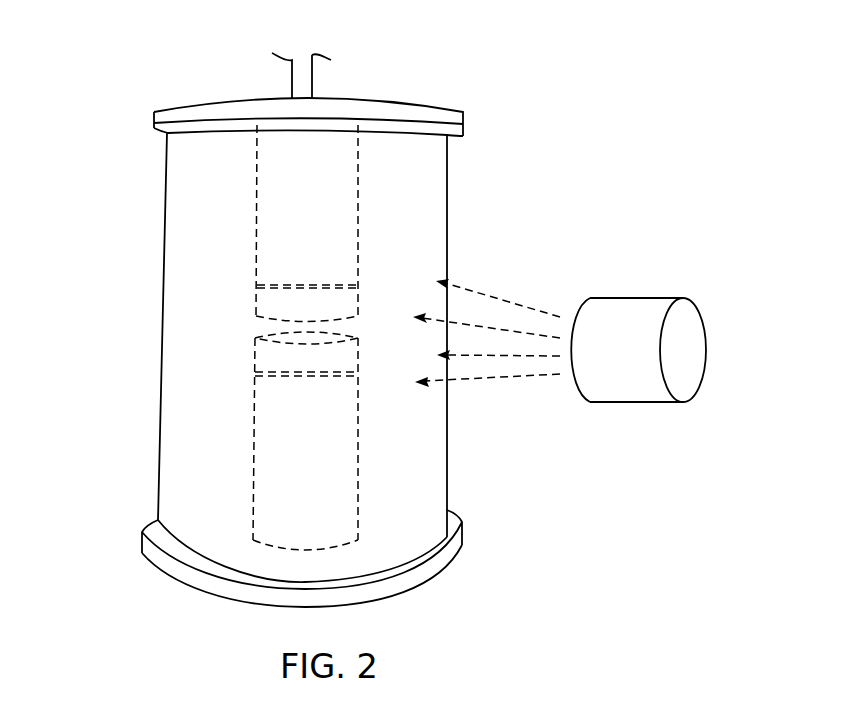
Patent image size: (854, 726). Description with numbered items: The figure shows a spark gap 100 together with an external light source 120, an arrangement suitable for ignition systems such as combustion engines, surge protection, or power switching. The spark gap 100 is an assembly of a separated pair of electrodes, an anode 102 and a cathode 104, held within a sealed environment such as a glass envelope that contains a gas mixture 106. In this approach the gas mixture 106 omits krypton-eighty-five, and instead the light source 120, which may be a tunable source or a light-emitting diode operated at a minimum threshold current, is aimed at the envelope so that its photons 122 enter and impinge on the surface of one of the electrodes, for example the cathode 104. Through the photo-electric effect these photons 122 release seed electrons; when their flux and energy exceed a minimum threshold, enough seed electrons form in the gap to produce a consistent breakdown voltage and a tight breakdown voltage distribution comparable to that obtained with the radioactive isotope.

The spark gap 100 is at (270, 330).
The anode 102 is at (268, 358).
The cathode 104 is at (275, 300).
The gas mixture 106 is at (415, 217).
The light source 120 is at (637, 380).
The photons 122 is at (527, 283).